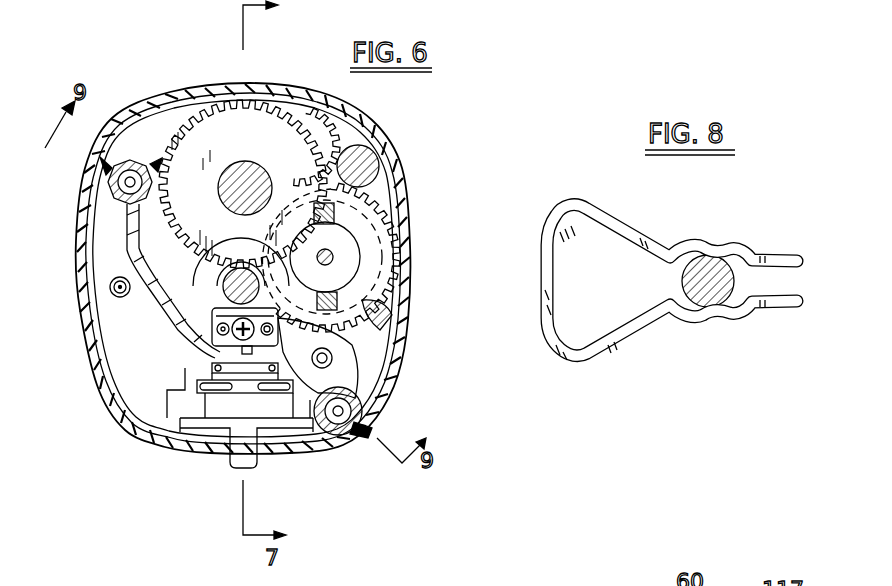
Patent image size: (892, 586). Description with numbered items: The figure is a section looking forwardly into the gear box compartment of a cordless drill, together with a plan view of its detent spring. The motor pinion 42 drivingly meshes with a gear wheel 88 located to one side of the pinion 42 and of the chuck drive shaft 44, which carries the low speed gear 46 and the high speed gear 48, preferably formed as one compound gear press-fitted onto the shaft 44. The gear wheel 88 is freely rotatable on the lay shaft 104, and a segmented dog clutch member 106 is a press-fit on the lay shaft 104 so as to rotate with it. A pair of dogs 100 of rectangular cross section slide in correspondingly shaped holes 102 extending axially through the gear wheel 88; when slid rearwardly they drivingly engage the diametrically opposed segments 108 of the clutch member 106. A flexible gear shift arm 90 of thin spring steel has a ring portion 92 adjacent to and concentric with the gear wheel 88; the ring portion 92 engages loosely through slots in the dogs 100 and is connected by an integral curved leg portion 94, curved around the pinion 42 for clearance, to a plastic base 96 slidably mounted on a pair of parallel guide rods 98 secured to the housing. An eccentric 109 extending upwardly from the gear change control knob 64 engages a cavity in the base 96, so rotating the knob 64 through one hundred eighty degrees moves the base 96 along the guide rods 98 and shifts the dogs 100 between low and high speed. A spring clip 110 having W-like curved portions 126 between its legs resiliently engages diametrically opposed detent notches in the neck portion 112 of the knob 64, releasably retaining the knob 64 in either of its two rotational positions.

In FIG. 6, the motor pinion 42 is at (223, 282).
In FIG. 6, the chuck drive shaft 44 is at (233, 173).
In FIG. 6, the low speed gear 46 is at (163, 230).
In FIG. 6, the high speed gear 48 is at (208, 199).
In FIG. 6, the gear change control knob 64 is at (233, 458).
In FIG. 6, the gear wheel 88 is at (345, 343).
In FIG. 6, the flexible gear shift arm 90 is at (250, 100).
In FIG. 6, the ring portion 92 is at (410, 275).
In FIG. 6, the curved leg portion 94 is at (212, 304).
In FIG. 6, the plastic base 96 is at (332, 358).
In FIG. 6, the guide rods 98 is at (345, 392).
In FIG. 6, the dogs 100 is at (385, 160).
In FIG. 6, the holes 102 is at (298, 107).
In FIG. 6, the lay shaft 104 is at (332, 255).
In FIG. 6, the segmented dog clutch member 106 is at (385, 262).
In FIG. 6, the segments 108 is at (335, 213).
In FIG. 6, the eccentric 109 is at (183, 450).
In FIG. 6, the spring clip 110 is at (288, 405).
In FIG. 8, the spring clip 110 is at (588, 206).
In FIG. 6, the neck portion 112 is at (253, 400).
In FIG. 8, the neck portion 112 is at (690, 283).
In FIG. 8, the W-like curved portions 126 is at (730, 243).